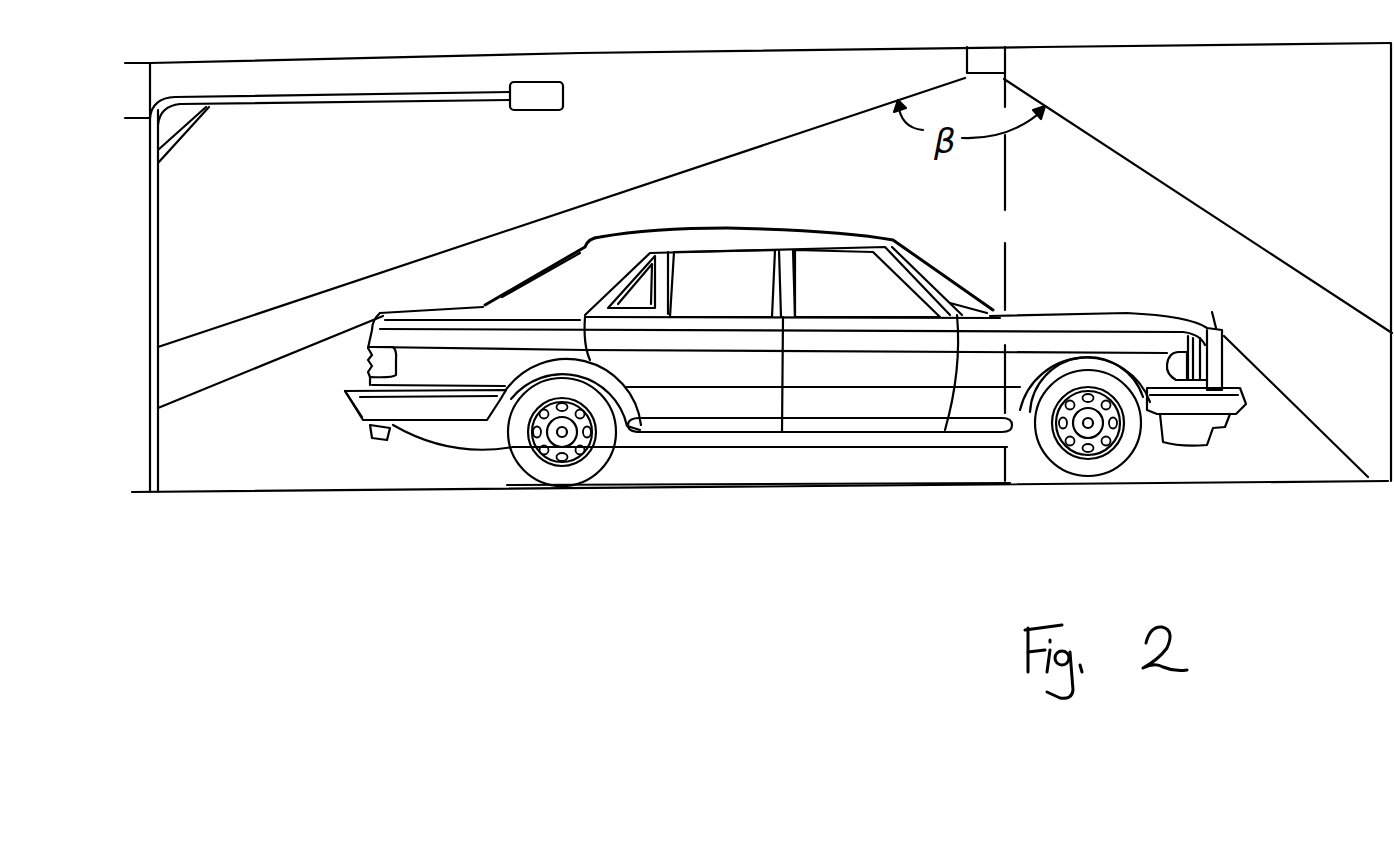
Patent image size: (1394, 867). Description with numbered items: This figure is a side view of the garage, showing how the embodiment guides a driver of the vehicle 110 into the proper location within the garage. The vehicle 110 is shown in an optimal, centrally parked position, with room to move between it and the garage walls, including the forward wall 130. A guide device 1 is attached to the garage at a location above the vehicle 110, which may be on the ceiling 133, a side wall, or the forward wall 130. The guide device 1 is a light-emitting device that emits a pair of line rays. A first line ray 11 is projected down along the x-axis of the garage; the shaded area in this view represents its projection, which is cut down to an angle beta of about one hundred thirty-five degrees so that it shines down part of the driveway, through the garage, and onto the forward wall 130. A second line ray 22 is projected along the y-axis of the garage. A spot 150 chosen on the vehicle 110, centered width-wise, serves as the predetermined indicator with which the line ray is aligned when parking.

The guide device 1 is at (775, 262).
The first line ray 11 is at (315, 537).
The second line ray 22 is at (760, 504).
The vehicle 110 is at (718, 403).
The forward wall 130 is at (1333, 262).
The ceiling 133 is at (757, 103).
The spot 150 is at (1015, 298).